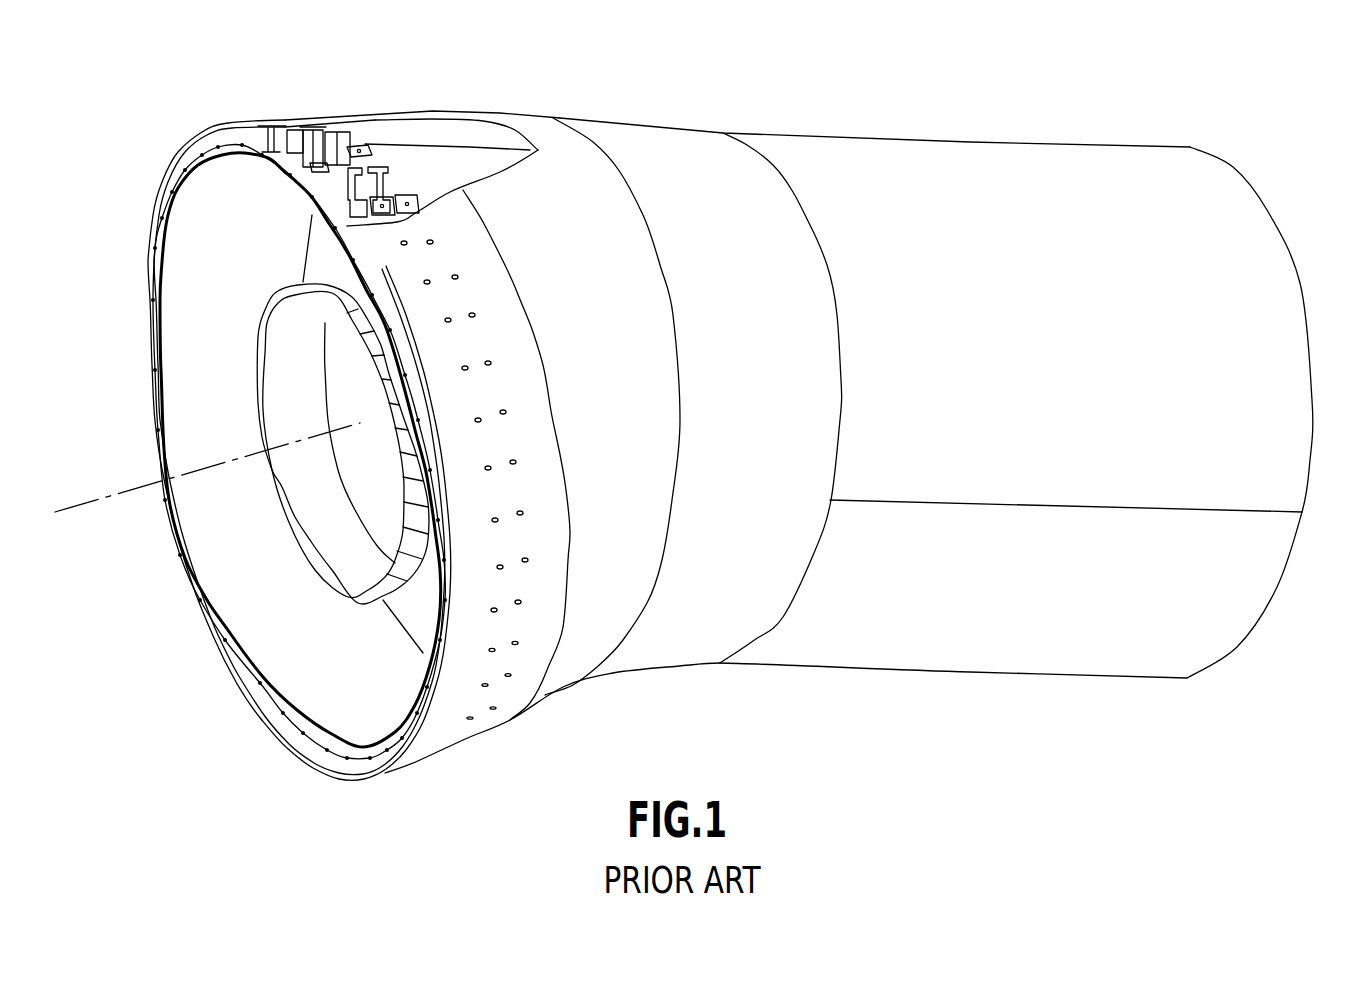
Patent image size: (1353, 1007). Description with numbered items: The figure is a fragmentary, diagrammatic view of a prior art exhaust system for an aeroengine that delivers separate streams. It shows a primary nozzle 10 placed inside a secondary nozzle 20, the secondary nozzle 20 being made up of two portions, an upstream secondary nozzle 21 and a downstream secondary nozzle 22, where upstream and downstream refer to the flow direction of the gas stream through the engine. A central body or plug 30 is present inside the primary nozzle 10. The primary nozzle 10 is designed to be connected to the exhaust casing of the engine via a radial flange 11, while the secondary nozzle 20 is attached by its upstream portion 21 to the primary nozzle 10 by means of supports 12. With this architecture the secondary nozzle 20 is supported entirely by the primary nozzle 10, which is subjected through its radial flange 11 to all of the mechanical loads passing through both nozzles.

The primary nozzle 10 is at (447, 160).
The radial flange 11 is at (232, 155).
The supports 12 is at (385, 165).
The secondary nozzle 20 is at (726, 126).
The upstream secondary nozzle 21 is at (628, 142).
The downstream secondary nozzle 22 is at (852, 160).
The central body 30 is at (283, 392).